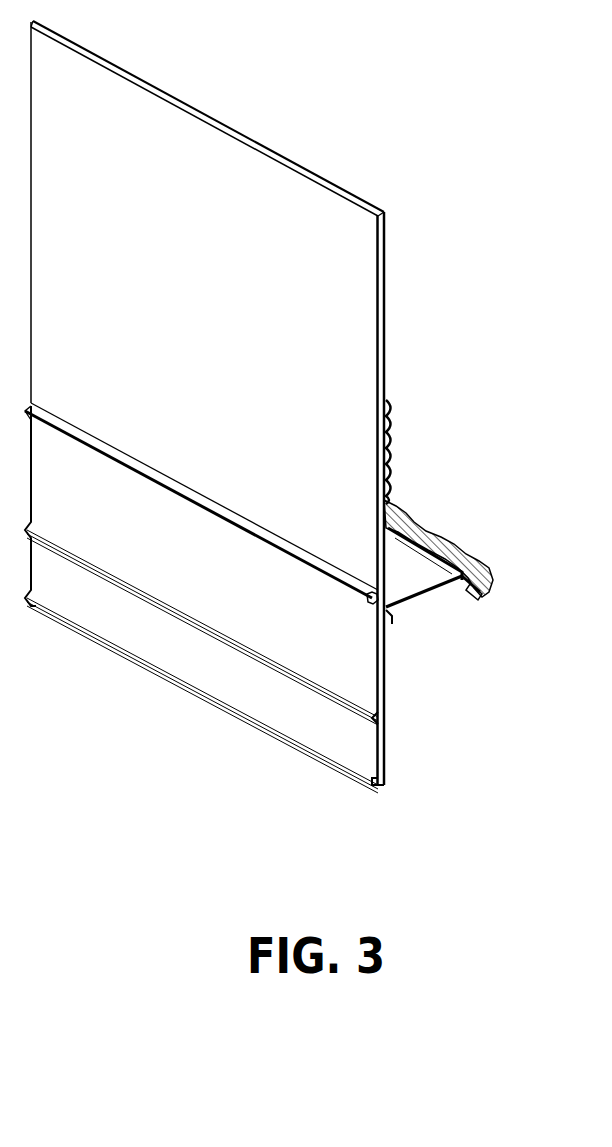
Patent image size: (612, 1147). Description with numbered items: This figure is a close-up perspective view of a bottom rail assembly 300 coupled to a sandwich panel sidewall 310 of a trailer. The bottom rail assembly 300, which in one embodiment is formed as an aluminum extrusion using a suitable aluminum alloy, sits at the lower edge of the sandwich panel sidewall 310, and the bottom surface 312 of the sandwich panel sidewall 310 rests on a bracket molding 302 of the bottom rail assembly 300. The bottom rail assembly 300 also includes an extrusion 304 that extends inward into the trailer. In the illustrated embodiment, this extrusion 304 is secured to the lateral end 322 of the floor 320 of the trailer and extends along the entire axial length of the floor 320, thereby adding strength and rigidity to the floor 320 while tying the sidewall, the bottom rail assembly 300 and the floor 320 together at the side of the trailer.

The bottom rail assembly 300 is at (385, 718).
The bracket molding 302 is at (370, 600).
The extrusion 304 is at (426, 583).
The sandwich panel sidewall 310 is at (384, 258).
The bottom surface 312 is at (390, 617).
The floor 320 is at (465, 545).
The lateral end 322 is at (476, 596).